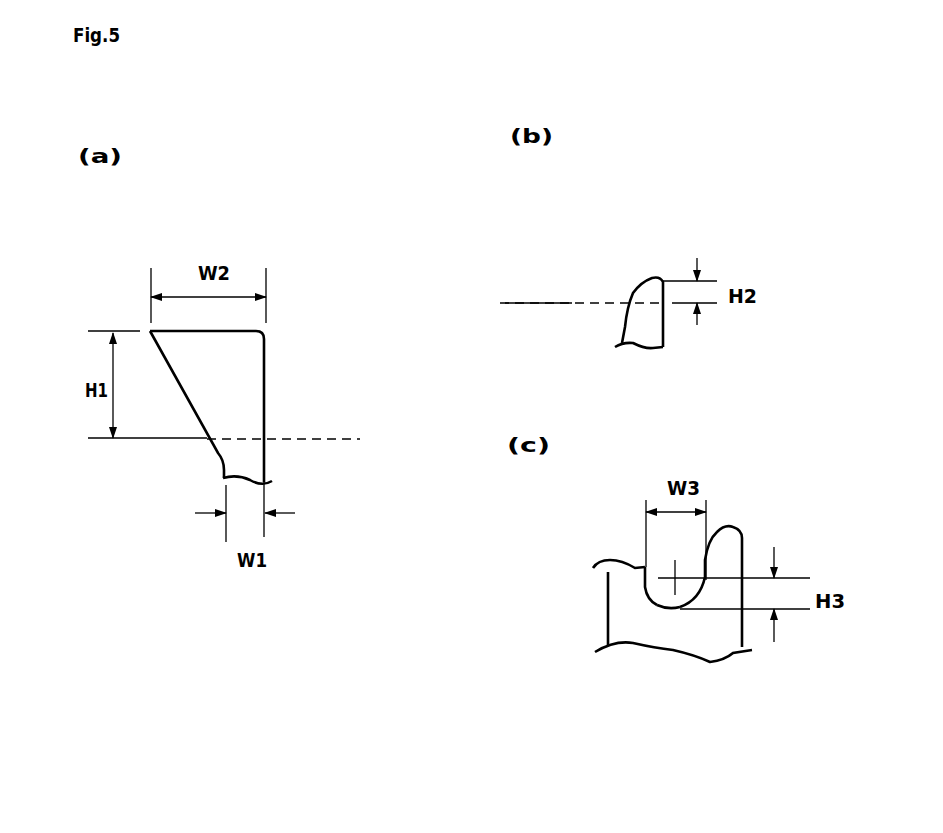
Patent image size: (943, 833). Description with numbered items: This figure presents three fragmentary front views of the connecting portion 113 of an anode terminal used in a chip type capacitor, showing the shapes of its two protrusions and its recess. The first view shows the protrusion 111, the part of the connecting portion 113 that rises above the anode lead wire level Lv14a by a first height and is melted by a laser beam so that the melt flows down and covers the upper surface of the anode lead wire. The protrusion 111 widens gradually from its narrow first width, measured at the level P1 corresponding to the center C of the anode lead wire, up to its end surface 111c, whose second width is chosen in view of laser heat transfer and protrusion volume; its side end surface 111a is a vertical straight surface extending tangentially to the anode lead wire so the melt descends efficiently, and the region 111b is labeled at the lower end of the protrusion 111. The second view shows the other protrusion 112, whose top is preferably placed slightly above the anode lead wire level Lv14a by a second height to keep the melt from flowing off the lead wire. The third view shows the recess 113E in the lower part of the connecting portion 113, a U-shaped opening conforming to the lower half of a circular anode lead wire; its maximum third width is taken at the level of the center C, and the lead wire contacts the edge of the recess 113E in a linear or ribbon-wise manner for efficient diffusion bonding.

In FIG. 5a, the protrusion 111 is at (222, 375).
In FIG. 5a, the side end surface 111a is at (265, 405).
In FIG. 5a, the tooth bottom / root 111b is at (217, 454).
In FIG. 5a, the end surface 111c is at (225, 329).
In FIG. 5a, the level of the center of the anode lead wire P1 is at (265, 468).
In FIG. 5a, the anode lead wire level Lv14a is at (257, 433).
In FIG. 5b, the anode lead wire level Lv14a is at (580, 293).
In FIG. 5b, the protrusion 112 is at (650, 248).
In FIG. 5c, the connecting portion 113 is at (648, 569).
In FIG. 5c, the recess 113E is at (678, 607).
In FIG. 5c, the center of the anode lead wire C is at (675, 578).